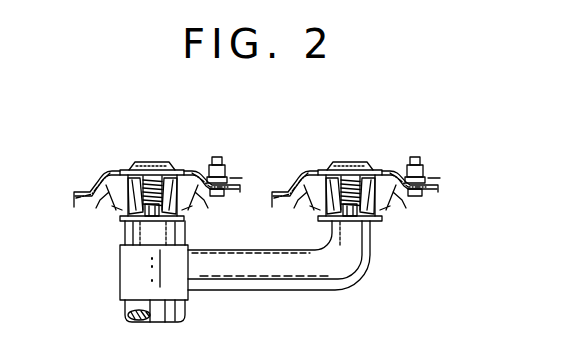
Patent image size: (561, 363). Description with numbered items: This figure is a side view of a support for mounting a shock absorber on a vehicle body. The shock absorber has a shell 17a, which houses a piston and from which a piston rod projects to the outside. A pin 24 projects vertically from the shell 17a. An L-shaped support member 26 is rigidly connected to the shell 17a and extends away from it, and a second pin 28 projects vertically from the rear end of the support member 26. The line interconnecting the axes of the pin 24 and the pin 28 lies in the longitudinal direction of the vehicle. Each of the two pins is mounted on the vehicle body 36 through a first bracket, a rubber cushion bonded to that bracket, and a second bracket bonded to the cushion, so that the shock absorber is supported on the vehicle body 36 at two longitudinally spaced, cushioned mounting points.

The shell 17a is at (127, 306).
The pin 24 is at (147, 152).
The L-shaped support member 26 is at (338, 282).
The pin 28 is at (356, 152).
The vehicle body 36 is at (221, 157).